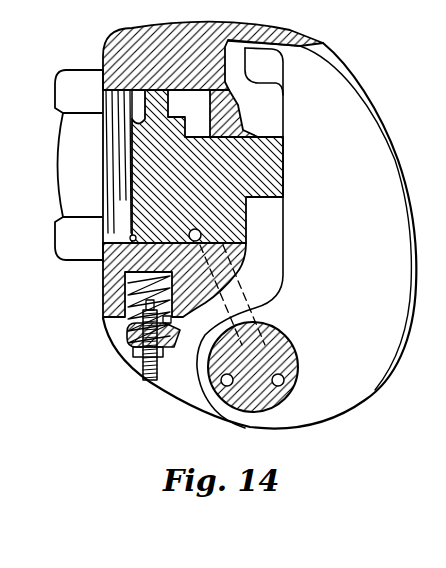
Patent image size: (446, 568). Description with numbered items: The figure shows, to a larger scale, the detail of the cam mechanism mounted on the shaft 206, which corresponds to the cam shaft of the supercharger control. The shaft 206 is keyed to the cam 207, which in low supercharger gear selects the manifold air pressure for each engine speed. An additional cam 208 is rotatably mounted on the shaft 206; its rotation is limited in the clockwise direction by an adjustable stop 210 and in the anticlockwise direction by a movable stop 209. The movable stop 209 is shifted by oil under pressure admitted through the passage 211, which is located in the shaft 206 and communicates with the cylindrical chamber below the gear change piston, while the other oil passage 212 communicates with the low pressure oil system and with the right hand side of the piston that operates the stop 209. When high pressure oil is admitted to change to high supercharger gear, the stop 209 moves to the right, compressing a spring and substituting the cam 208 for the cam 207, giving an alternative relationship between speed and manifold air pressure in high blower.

The shaft 206 is at (276, 332).
The cam 207 is at (160, 390).
The additional cam 208 is at (259, 225).
The movable stop 209 is at (284, 167).
The adjustable stop 210 is at (133, 316).
The oil passage 211 is at (105, 262).
The oil passage 212 is at (201, 235).